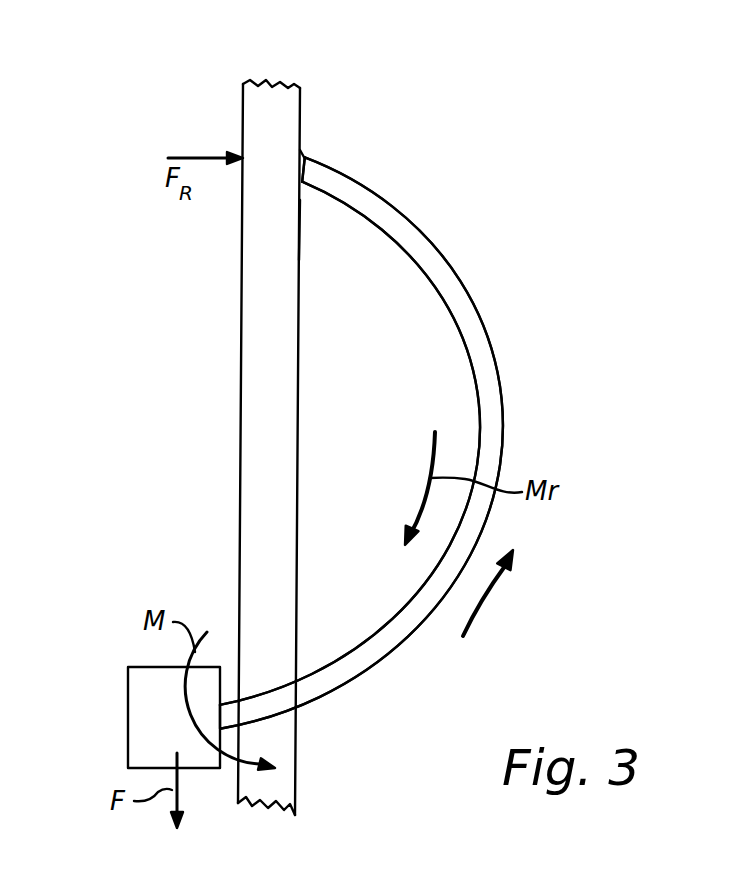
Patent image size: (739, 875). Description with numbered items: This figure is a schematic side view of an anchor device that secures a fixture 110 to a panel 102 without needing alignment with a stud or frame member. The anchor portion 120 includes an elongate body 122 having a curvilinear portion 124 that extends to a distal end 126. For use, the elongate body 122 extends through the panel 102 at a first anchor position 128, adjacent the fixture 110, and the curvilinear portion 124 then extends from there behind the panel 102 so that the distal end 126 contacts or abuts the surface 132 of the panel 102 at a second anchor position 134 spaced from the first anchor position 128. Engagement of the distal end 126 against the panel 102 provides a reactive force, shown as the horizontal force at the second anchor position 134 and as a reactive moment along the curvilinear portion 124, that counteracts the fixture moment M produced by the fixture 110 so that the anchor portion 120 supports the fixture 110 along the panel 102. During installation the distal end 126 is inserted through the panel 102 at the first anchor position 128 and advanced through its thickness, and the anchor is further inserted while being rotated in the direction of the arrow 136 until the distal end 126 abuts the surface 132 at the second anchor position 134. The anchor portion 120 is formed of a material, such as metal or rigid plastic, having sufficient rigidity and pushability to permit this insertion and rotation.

The panel 102 is at (267, 82).
The fixture 110 is at (128, 667).
The anchor portion 120 is at (512, 355).
The elongate body 122 is at (512, 428).
The curvilinear portion 124 is at (470, 352).
The distal end 126 is at (313, 155).
The first anchor position 128 is at (312, 711).
The surface 132 is at (299, 232).
The second anchor position 134 is at (310, 145).
The arrow 136 is at (500, 573).